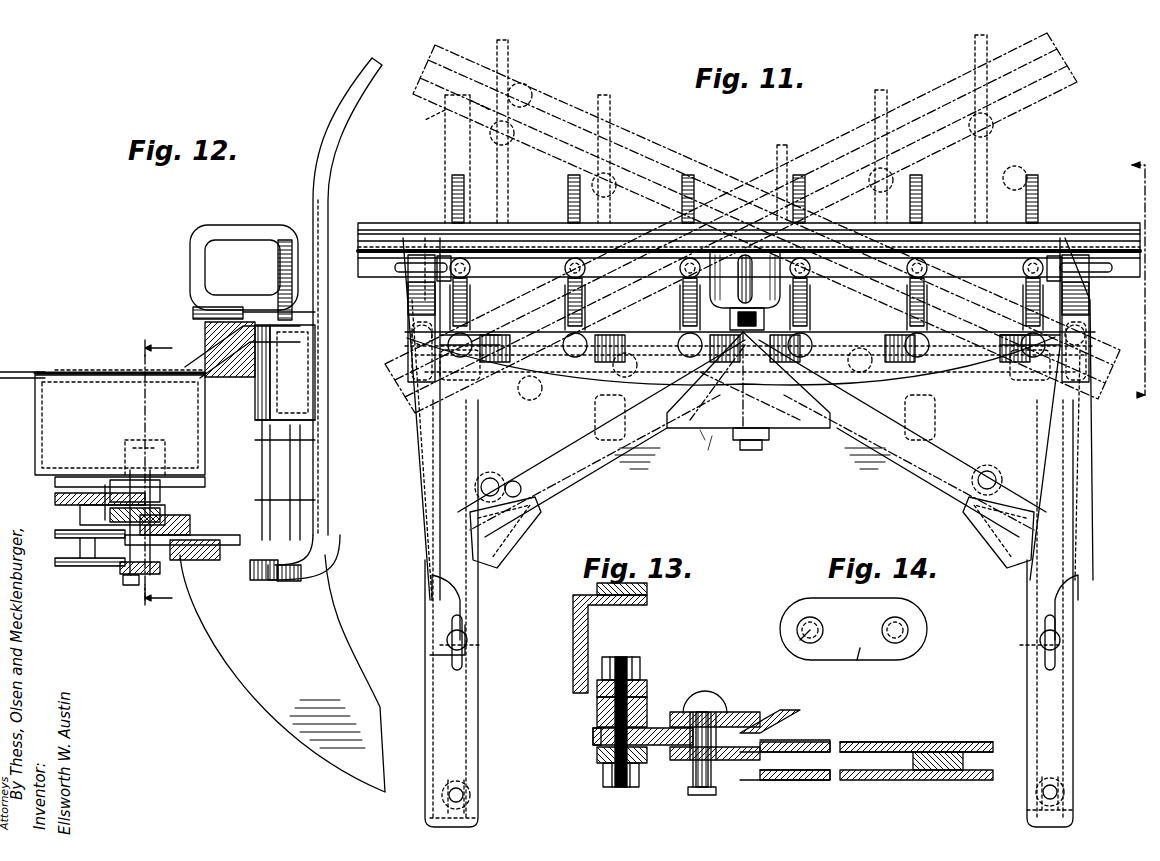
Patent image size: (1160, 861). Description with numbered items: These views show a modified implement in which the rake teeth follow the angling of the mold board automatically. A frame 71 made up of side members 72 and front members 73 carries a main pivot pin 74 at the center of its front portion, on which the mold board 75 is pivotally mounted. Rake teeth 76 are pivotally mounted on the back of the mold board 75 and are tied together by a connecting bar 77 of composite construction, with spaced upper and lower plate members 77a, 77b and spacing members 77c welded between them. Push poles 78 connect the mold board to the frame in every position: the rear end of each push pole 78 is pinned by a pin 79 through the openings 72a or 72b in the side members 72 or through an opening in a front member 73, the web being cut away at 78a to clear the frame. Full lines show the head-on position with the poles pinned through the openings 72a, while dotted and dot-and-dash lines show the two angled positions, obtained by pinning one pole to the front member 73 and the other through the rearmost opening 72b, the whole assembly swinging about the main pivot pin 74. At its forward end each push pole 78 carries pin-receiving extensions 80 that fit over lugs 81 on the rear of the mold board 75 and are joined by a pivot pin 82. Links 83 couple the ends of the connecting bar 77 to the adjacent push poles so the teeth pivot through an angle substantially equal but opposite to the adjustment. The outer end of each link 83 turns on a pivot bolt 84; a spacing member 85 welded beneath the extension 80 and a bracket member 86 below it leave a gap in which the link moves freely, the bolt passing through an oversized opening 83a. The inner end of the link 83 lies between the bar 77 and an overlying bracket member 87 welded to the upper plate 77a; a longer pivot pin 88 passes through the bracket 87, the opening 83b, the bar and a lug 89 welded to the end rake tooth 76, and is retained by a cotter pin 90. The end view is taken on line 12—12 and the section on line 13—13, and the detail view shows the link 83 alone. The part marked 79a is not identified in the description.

In FIG. 11, the line 12— 12 is at (1130, 271).
In FIG. 12, the line 13— 13 is at (168, 475).
In FIG. 11, the frame 71 is at (543, 492).
In FIG. 11, the side members 72 is at (478, 640).
In FIG. 11, the pin-receiving openings 72a is at (1035, 648).
In FIG. 11, the rearmost pin-receiving openings 72b is at (464, 795).
In FIG. 11, the front members 73 is at (645, 450).
In FIG. 12, the main pivot pin 74 is at (193, 316).
In FIG. 11, the main pivot pin 74 is at (745, 250).
In FIG. 12, the mold board 75 is at (312, 186).
In FIG. 11, the mold board 75 is at (400, 223).
In FIG. 12, the rake teeth 76 is at (268, 695).
In FIG. 11, the rake teeth 76 is at (452, 182).
In FIG. 12, the connecting bar 77 is at (76, 544).
In FIG. 11, the connecting bar 77 is at (518, 330).
In FIG. 13, the connecting bar 77 is at (850, 742).
In FIG. 11, the upper plate member 77a is at (590, 400).
In FIG. 13, the upper plate member 77a is at (905, 742).
In FIG. 13, the lower plate member 77b is at (855, 780).
In FIG. 11, the spacing members 77c is at (695, 373).
In FIG. 13, the spacing members 77c is at (935, 770).
In FIG. 12, the push poles 78 is at (45, 374).
In FIG. 11, the push poles 78 is at (405, 482).
In FIG. 13, the push poles 78 is at (573, 633).
In FIG. 11, the cut-away portion of web 78a is at (445, 625).
In FIG. 11, the pins 79 is at (445, 645).
In FIG. 11, the end bracket 79a is at (510, 510).
In FIG. 12, the pin-receiving extensions 80 is at (205, 345).
In FIG. 11, the pin-receiving extensions 80 is at (408, 292).
In FIG. 13, the pin-receiving extensions 80 is at (647, 589).
In FIG. 12, the pin-receiving lugs 81 is at (315, 350).
In FIG. 11, the pin-receiving lugs 81 is at (395, 268).
In FIG. 12, the pivot pin 82 is at (288, 582).
In FIG. 11, the pivot pin 82 is at (437, 270).
In FIG. 12, the links 83 is at (105, 520).
In FIG. 11, the links 83 is at (751, 365).
In FIG. 13, the links 83 is at (593, 740).
In FIG. 14, the links 83 is at (860, 648).
In FIG. 13, the opening 83a is at (593, 733).
In FIG. 14, the opening 83a is at (800, 622).
In FIG. 13, the opening 83b is at (722, 715).
In FIG. 14, the opening 83b is at (905, 622).
In FIG. 12, the pivot bolt 84 is at (125, 550).
In FIG. 11, the pivot bolt 84 is at (412, 335).
In FIG. 13, the pivot bolt 84 is at (618, 787).
In FIG. 14, the pivot bolt 84 is at (800, 640).
In FIG. 12, the spacing member 85 is at (170, 490).
In FIG. 13, the spacing member 85 is at (597, 710).
In FIG. 12, the bracket member 86 is at (228, 548).
In FIG. 13, the bracket member 86 is at (597, 757).
In FIG. 12, the bracket member 87 is at (100, 500).
In FIG. 11, the bracket member 87 is at (490, 333).
In FIG. 13, the bracket member 87 is at (775, 716).
In FIG. 12, the pivot pin 88 is at (140, 570).
In FIG. 11, the pivot pin 88 is at (440, 340).
In FIG. 13, the pivot pin 88 is at (705, 712).
In FIG. 14, the pivot pin 88 is at (920, 650).
In FIG. 11, the lug 89 is at (452, 318).
In FIG. 13, the lug 89 is at (693, 777).
In FIG. 12, the cotter pin 90 is at (122, 583).
In FIG. 13, the cotter pin 90 is at (712, 795).